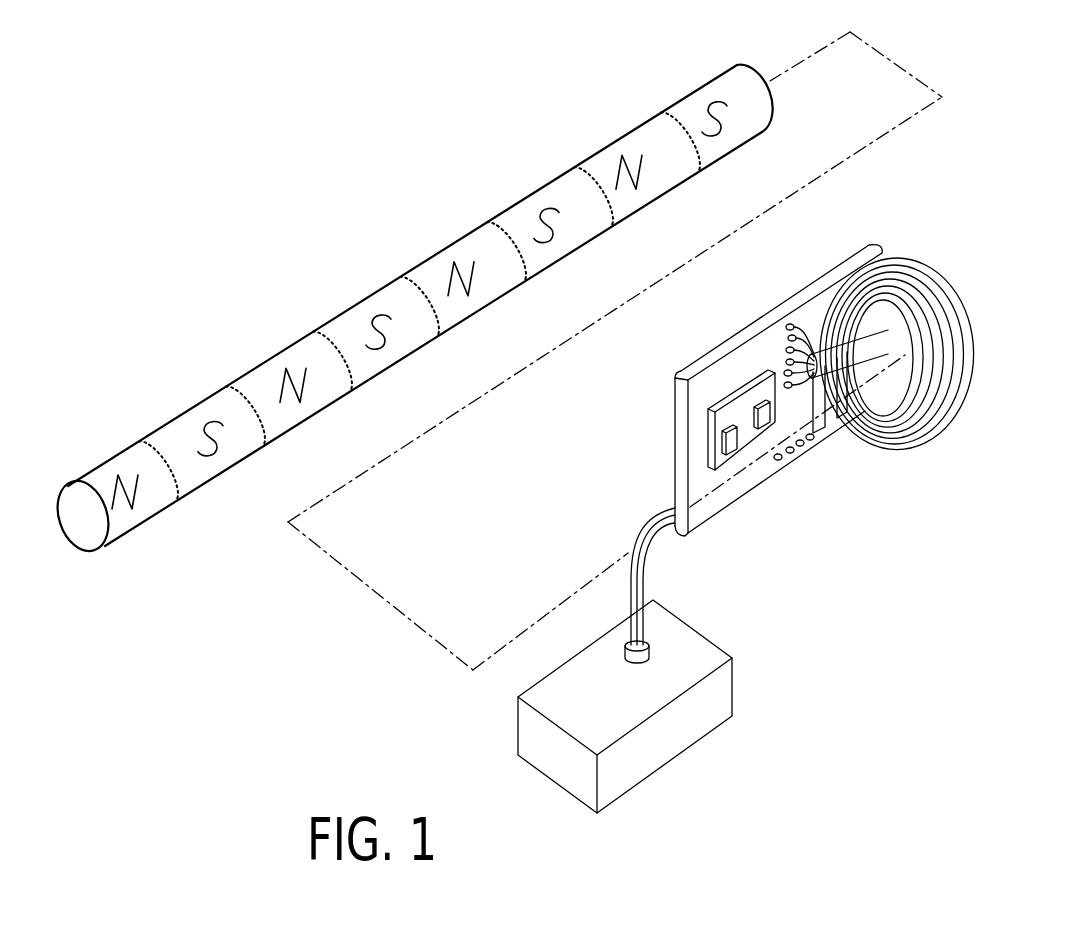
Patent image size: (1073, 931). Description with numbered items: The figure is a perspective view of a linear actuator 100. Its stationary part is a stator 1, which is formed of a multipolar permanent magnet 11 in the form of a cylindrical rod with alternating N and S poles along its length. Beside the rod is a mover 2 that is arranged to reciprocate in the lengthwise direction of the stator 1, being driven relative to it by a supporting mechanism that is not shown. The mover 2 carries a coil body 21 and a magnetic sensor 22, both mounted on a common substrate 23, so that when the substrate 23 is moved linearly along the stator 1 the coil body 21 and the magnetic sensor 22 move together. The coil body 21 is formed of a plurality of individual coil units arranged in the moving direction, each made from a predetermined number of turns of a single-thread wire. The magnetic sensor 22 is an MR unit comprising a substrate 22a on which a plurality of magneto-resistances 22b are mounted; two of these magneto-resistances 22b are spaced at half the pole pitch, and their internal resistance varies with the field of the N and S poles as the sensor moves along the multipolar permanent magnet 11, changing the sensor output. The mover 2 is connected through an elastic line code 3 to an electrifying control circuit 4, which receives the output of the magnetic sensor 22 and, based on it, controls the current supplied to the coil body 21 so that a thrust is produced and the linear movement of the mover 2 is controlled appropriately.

The linear actuator 100 is at (226, 706).
The stator 1 is at (320, 264).
The multipolar permanent magnet 11 is at (250, 363).
The mover 2 is at (875, 543).
The coil body 21 is at (940, 427).
The magnetic sensor 22 is at (747, 450).
The substrate 22a is at (755, 383).
The magneto-resistances 22b is at (758, 420).
The substrate 23 is at (853, 258).
The elastic line code 3 is at (645, 592).
The electrifying control circuit 4 is at (695, 722).